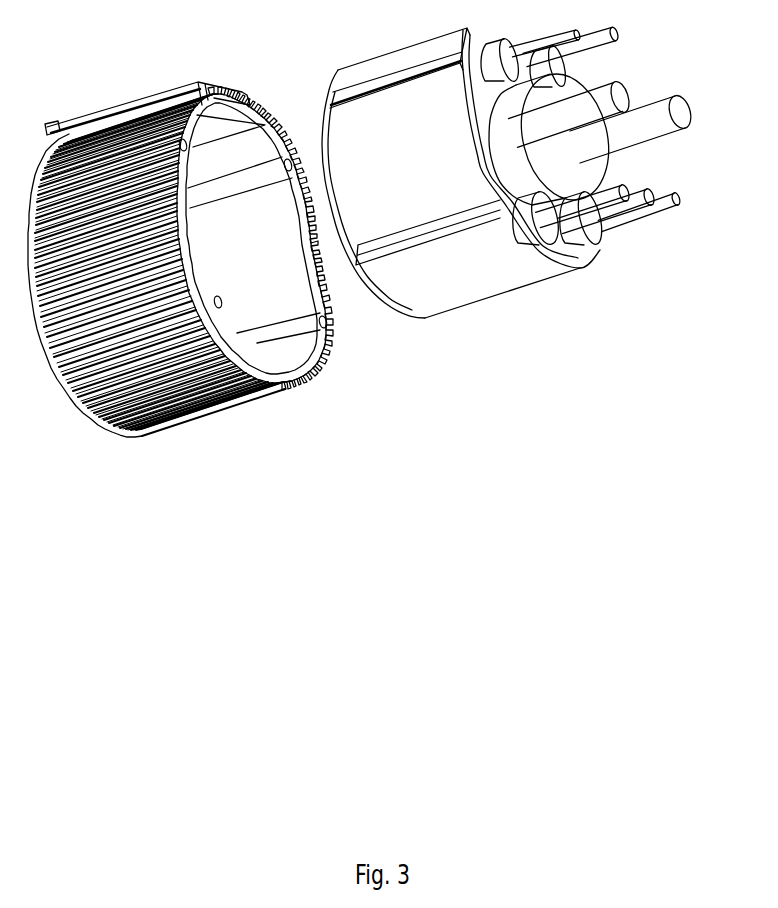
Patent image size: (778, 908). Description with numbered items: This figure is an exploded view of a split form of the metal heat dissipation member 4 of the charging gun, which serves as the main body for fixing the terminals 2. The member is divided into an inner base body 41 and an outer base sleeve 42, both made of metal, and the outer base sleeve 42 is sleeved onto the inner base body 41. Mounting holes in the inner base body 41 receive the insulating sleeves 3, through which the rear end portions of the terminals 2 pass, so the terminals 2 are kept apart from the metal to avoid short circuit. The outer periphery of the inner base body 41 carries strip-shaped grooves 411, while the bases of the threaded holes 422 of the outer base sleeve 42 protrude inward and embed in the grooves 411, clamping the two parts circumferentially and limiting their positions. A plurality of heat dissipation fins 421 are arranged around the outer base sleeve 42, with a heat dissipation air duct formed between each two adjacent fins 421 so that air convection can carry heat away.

The terminal 2 is at (614, 43).
The insulating sleeve 3 is at (597, 166).
The metal heat dissipation member 4 is at (364, 267).
The inner base body 41 is at (511, 217).
The groove 411 is at (393, 241).
The outer base sleeve 42 is at (265, 294).
The heat dissipation fin 421 is at (269, 398).
The threaded hole 422 is at (334, 334).